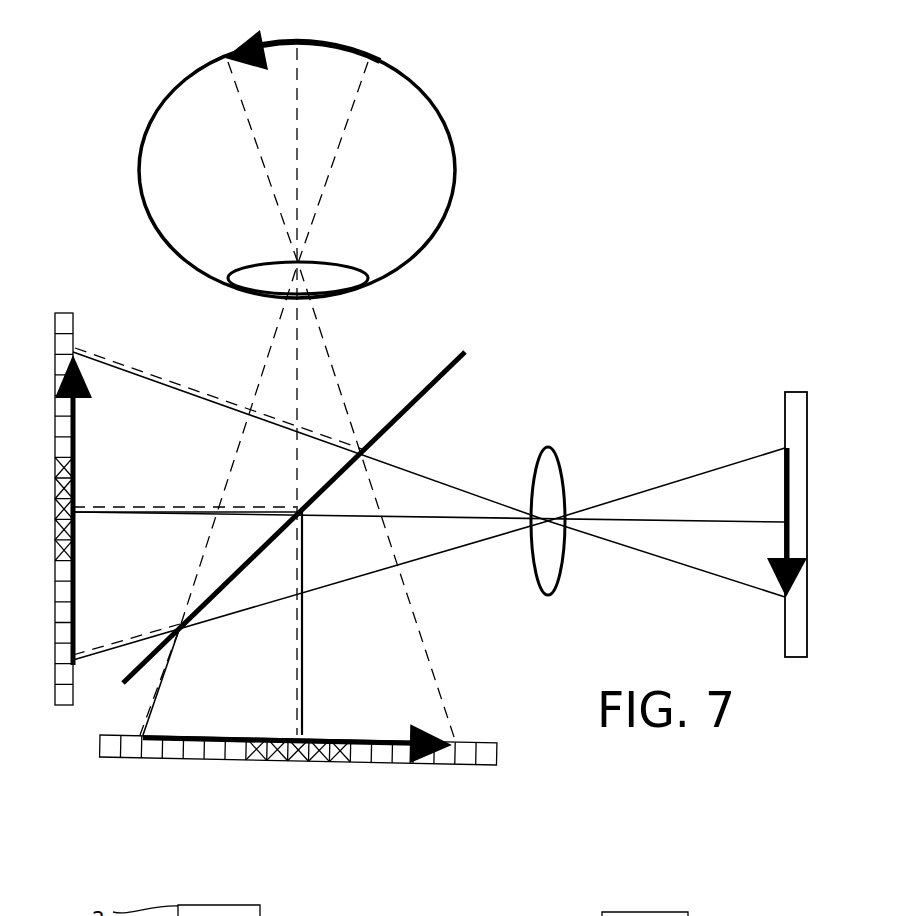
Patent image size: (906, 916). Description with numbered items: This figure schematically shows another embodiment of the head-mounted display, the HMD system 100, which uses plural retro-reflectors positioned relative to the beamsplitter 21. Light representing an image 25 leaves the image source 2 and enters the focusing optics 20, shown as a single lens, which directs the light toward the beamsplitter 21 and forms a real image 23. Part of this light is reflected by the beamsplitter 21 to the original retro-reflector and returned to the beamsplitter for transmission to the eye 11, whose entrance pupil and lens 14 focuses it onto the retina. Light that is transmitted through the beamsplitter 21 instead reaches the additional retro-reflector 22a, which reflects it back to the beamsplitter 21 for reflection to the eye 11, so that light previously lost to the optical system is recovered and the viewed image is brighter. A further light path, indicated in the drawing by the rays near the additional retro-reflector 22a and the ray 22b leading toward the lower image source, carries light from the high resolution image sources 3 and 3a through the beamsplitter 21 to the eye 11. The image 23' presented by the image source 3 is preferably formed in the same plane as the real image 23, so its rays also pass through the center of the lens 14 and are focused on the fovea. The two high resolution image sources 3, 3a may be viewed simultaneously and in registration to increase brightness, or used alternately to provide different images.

The HMD system 100 is at (548, 190).
The eye 11 is at (455, 172).
The entrance pupil and lens 14 is at (258, 285).
The image source 2 is at (808, 392).
The focusing optics 20 is at (565, 478).
The beamsplitter 21 is at (424, 386).
The additional retro-reflector 22a is at (55, 510).
The light ray from screen 3 22b is at (130, 758).
The real image 23 is at (253, 559).
The image presented by image source 3 23' is at (335, 714).
The image 25 is at (762, 476).
The image source 3 is at (340, 766).
The high resolution image source 3a is at (55, 548).